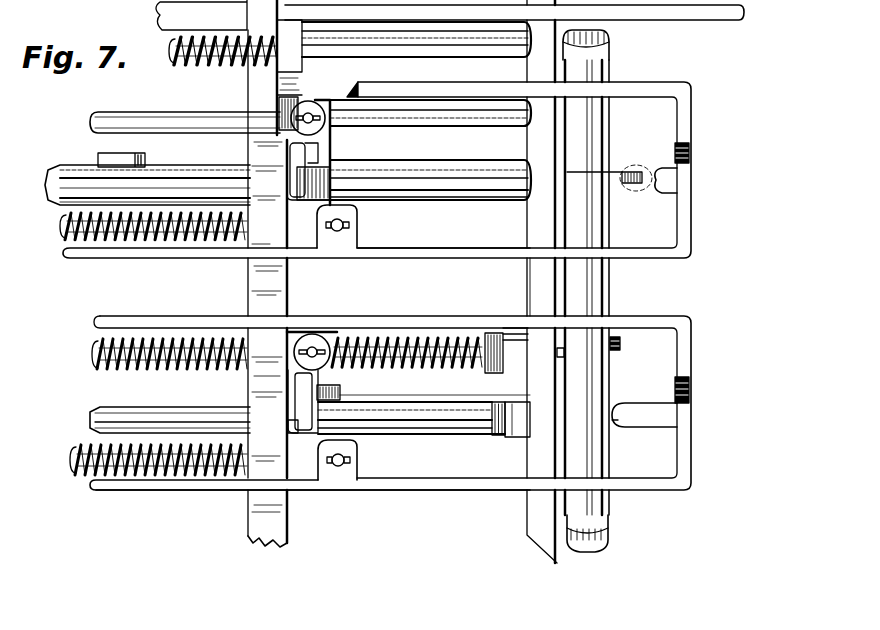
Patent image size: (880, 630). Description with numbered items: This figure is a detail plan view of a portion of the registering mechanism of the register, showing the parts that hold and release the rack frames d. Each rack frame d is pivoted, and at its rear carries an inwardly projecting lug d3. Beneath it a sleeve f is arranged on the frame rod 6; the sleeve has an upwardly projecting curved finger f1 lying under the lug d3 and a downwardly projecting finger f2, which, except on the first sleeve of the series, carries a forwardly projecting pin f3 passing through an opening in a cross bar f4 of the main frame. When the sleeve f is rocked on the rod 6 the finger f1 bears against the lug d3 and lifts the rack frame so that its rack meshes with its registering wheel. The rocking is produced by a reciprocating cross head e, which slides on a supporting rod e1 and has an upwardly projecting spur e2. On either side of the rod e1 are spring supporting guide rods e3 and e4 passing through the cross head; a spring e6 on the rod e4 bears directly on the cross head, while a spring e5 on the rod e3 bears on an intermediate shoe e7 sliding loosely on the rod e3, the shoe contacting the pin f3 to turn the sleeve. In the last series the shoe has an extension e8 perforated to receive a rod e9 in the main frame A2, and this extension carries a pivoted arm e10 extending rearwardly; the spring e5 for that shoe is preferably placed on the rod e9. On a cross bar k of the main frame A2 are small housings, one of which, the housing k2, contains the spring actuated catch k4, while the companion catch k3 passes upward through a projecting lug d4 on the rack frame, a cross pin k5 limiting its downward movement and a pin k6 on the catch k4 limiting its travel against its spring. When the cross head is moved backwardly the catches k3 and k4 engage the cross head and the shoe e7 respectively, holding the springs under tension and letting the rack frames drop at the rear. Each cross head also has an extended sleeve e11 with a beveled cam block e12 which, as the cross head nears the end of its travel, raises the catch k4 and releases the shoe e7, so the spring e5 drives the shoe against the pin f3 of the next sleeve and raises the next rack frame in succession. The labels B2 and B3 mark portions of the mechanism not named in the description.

The main frame A2 is at (356, 281).
The pivoted arm or lever e10 is at (643, 18).
The extension e8 is at (290, 55).
The rod e9 is at (453, 57).
The rack frame d is at (418, 490).
The upper lever frame B3 is at (444, 268).
The lower lever frame B2 is at (313, 508).
The intermediate shoe e7 is at (487, 335).
The cross head e is at (316, 163).
The upwardly projecting spur e2 is at (493, 410).
The cross bar k is at (297, 266).
The housing k2 is at (312, 336).
The spring actuated catch k4 is at (348, 378).
The cross pin k5 is at (300, 357).
The pin k6 is at (327, 458).
The projecting lug d4 is at (333, 472).
The spring actuated catch k3 is at (340, 467).
The spring e5 is at (128, 343).
The spring supporting guide rod e3 is at (93, 355).
The beveled or cam-shaped block e12 is at (287, 428).
The supporting rod e1 is at (128, 415).
The extended sleeve e11 is at (295, 302).
The spring e6 is at (97, 472).
The spring supporting guide rod e4 is at (72, 460).
The sleeve f is at (613, 512).
The frame rod 6 is at (586, 552).
The curved finger f1 is at (618, 403).
The inwardly projecting lug d3 is at (667, 413).
The downwardly projecting finger f2 is at (620, 343).
The forwardly projecting pin f3 is at (563, 351).
The cross bar f4 is at (537, 289).